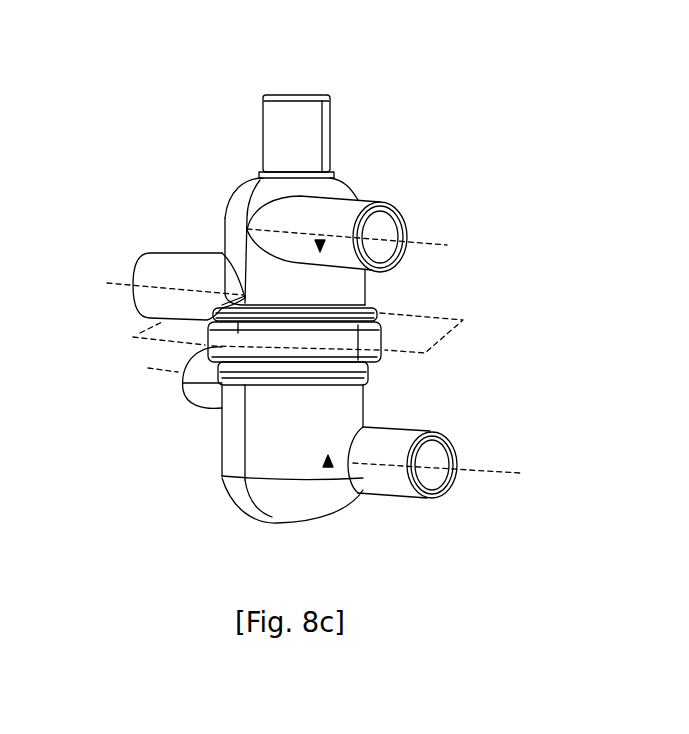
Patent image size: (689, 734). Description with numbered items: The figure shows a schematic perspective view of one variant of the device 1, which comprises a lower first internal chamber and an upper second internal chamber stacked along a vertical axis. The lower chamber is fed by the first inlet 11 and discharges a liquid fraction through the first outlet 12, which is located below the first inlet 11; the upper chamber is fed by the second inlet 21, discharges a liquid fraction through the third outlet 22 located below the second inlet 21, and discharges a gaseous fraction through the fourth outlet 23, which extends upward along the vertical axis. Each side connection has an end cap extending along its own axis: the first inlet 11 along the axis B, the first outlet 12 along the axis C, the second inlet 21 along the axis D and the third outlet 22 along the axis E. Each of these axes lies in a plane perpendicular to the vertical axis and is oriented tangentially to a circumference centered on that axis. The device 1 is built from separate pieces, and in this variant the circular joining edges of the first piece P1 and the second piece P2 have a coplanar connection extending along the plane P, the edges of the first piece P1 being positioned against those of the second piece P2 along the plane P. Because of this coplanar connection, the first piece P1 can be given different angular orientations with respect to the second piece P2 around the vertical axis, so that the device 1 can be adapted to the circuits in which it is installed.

The device 1 is at (228, 100).
The fourth outlet 23 is at (267, 96).
The second inlet 21 is at (390, 201).
The third outlet 22 is at (172, 252).
The first inlet 11 is at (213, 410).
The first outlet 12 is at (441, 500).
The axis E is at (128, 284).
The axis D is at (423, 242).
The axis C is at (487, 473).
The plane P is at (430, 317).
The axis B is at (172, 366).
The first piece P1 is at (330, 466).
The second piece P2 is at (321, 242).